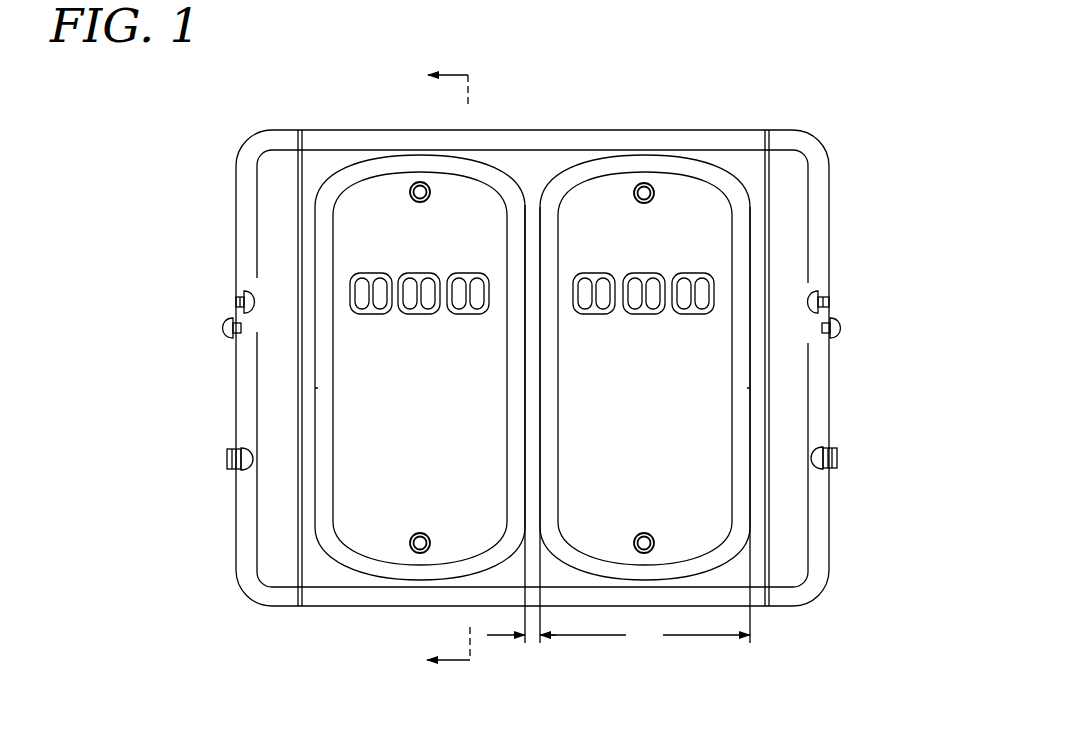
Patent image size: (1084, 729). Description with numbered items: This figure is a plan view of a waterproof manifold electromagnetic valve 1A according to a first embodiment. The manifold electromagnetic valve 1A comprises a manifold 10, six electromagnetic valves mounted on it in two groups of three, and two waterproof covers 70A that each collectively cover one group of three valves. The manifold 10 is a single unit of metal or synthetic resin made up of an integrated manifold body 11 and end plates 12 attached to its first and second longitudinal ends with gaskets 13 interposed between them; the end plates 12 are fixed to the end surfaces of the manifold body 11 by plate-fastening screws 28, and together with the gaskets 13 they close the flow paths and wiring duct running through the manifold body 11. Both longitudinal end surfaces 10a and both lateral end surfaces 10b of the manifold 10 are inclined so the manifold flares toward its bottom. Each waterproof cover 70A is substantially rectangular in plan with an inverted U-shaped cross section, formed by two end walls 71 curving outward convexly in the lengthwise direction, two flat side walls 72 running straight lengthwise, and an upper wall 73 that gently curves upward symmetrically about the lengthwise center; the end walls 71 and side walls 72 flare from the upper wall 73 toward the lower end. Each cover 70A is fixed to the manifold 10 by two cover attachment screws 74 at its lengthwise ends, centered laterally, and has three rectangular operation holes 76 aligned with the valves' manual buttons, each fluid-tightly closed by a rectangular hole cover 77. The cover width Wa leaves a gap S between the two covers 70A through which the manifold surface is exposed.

The manifold electromagnetic valve 1A is at (769, 44).
The manifold 10 is at (623, 127).
The end surface 10a is at (247, 253).
The end surface 10b is at (322, 140).
The manifold body 11 is at (685, 143).
The end plate 12 is at (267, 187).
The gasket 13 is at (300, 502).
The plate-fastening screw 28 is at (226, 331).
The waterproof cover 70A is at (315, 388).
The end wall 71 is at (375, 155).
The side wall 72 is at (530, 235).
The upper wall 73 is at (370, 505).
The cover attachment screw 74 is at (432, 186).
The operation hole 76 is at (409, 313).
The hole cover 77 is at (409, 274).